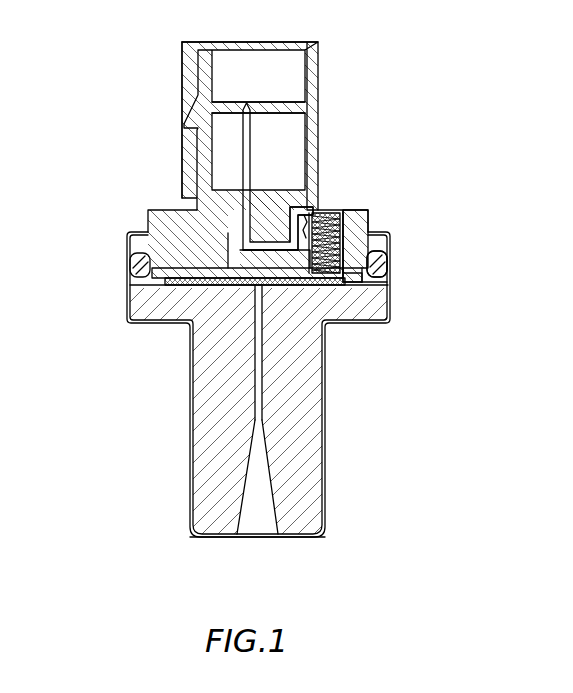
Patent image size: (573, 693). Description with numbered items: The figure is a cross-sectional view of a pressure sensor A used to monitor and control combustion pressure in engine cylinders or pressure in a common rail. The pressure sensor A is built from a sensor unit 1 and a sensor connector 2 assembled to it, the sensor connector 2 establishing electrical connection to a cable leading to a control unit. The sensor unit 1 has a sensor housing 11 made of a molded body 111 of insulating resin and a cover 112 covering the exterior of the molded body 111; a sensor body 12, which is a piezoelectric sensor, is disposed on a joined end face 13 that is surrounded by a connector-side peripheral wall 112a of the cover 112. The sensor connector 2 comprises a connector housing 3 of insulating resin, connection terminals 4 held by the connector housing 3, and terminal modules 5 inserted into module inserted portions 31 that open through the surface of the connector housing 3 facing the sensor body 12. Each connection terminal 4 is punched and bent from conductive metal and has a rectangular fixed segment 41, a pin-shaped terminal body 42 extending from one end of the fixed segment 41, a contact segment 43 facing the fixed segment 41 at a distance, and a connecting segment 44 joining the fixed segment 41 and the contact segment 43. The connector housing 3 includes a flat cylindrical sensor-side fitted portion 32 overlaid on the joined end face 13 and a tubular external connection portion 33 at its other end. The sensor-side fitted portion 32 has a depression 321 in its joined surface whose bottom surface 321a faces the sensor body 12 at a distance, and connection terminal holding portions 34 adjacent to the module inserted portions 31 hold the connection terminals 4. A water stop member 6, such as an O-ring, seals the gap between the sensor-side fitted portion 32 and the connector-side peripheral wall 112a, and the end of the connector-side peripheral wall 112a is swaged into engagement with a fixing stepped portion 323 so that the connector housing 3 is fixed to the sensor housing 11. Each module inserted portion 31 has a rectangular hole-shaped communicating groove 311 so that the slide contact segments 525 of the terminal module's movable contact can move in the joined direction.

The sensor unit 1 is at (192, 496).
The sensor connector 2 is at (320, 135).
The connector housing 3 is at (108, 118).
The connection terminal 4 is at (237, 138).
The terminal module 5 is at (390, 250).
The water stop member 6 is at (132, 262).
The sensor housing 11 is at (283, 409).
The sensor body 12 is at (192, 296).
The joined end face 13 is at (132, 328).
The module inserted portion 31 is at (350, 212).
The sensor-side fitted portion 32 is at (170, 210).
The external connection portion 33 is at (195, 165).
The connection terminal holding portion 34 is at (212, 300).
The fixed segment 41 is at (232, 226).
The terminal body 42 is at (262, 115).
The contact segment 43 is at (302, 208).
The connecting segment 44 is at (342, 300).
The molded body 111 is at (405, 418).
The cover 112 is at (326, 420).
The connector-side peripheral wall 112a is at (372, 236).
The communicating groove 311 is at (306, 203).
The depression 321 is at (128, 288).
The bottom surface 321a is at (390, 290).
The fixing stepped portion 323 is at (365, 235).
The slide contact segment 525 is at (348, 300).
The pressure sensor A is at (396, 270).